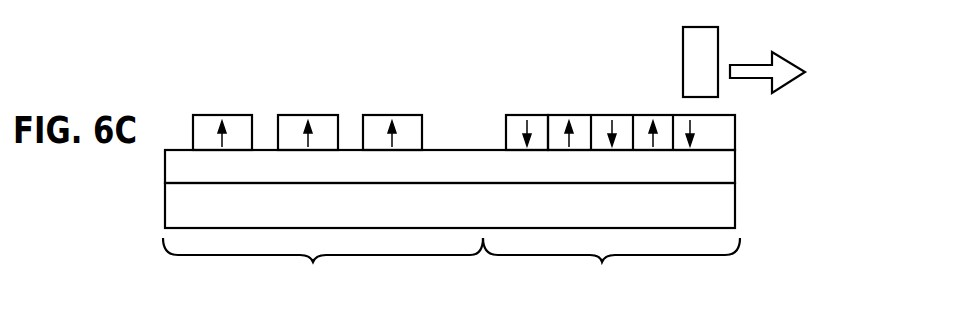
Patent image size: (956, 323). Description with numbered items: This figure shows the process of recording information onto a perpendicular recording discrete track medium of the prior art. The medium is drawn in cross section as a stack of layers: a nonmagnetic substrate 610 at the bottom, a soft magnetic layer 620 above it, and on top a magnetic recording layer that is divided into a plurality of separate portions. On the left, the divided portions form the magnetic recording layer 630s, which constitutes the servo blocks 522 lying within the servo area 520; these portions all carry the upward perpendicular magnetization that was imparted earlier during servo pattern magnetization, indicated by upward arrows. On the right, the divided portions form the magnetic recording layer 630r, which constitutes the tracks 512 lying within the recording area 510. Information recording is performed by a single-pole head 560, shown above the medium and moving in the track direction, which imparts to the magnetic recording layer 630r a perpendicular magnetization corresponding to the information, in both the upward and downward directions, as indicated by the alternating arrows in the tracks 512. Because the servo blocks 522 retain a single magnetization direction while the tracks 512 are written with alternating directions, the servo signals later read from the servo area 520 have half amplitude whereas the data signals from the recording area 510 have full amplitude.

The recording area 510 is at (602, 262).
The track 512 is at (400, 102).
The servo area 520 is at (313, 262).
The servo block 522 is at (532, 102).
The single-pole head 560 is at (710, 35).
The nonmagnetic substrate 610 is at (723, 195).
The soft magnetic layer 620 is at (723, 163).
The magnetic recording layer (servo blocks) 630s is at (333, 115).
The magnetic recording layer (tracks) 630r is at (723, 137).